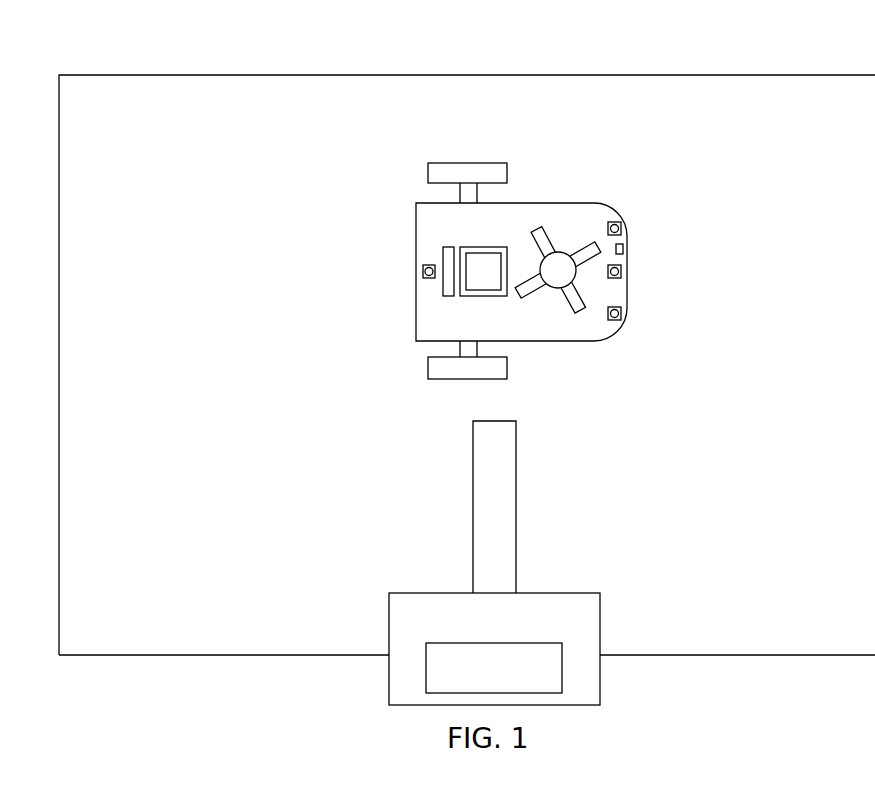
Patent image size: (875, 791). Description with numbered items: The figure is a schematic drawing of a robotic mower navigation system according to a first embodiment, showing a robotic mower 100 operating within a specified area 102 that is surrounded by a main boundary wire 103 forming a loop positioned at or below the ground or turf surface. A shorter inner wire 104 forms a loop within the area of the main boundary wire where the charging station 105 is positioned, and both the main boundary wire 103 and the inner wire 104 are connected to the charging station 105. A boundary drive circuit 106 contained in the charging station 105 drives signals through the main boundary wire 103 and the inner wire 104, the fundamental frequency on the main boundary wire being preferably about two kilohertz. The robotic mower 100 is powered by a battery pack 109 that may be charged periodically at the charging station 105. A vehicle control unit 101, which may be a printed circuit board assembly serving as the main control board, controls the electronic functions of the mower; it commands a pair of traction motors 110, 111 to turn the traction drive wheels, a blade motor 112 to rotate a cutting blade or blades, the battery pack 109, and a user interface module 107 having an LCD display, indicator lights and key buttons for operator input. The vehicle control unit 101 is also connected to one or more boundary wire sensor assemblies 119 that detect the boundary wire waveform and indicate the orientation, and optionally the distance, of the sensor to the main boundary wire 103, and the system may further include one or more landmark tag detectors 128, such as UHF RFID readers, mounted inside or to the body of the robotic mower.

The robotic mower 100 is at (602, 130).
The vehicle control unit 101 is at (467, 247).
The specified area 102 is at (747, 605).
The main boundary wire 103 is at (336, 75).
The inner wire 104 is at (516, 507).
The charging station 105 is at (389, 680).
The boundary drive circuit 106 is at (499, 643).
The user interface module 107 is at (477, 292).
The battery pack 109 is at (443, 254).
The traction motor 110 is at (460, 193).
The traction motor 111 is at (460, 349).
The blade motor 112 is at (553, 292).
The boundary wire sensor assembly 119 is at (423, 276).
The landmark tag detector 128 is at (623, 250).